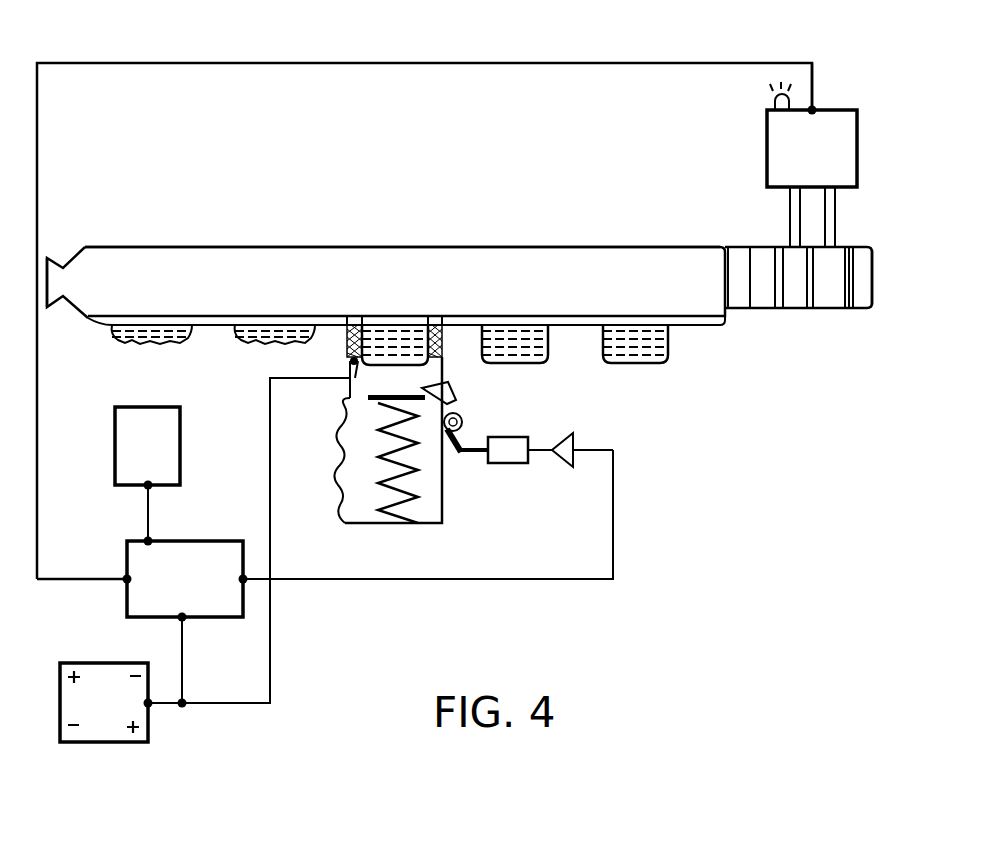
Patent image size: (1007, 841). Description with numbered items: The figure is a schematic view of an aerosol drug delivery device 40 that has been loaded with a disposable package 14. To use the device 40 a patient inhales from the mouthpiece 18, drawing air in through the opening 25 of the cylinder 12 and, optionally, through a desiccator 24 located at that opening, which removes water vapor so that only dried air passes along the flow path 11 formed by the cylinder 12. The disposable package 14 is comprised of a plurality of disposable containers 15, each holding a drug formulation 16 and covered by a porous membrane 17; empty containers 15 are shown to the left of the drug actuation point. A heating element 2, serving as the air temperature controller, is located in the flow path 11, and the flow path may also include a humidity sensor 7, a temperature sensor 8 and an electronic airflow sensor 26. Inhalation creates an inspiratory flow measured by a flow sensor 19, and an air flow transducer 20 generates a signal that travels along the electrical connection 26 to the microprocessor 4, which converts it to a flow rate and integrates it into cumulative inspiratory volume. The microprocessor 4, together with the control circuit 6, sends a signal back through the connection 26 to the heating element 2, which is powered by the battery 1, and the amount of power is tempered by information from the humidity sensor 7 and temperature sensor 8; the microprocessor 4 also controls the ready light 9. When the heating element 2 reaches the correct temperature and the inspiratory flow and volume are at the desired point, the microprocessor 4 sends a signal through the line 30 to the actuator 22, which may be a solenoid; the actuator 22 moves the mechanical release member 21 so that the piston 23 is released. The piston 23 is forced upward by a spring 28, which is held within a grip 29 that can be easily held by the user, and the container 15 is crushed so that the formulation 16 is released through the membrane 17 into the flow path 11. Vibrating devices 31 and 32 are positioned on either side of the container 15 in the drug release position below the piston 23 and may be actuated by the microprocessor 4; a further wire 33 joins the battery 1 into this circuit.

The battery 1 is at (130, 663).
The heating element 2 is at (740, 300).
The microprocessor 4 is at (142, 622).
The control circuit 6 is at (147, 474).
The humidity sensor 7 is at (777, 300).
The temperature sensor 8 is at (812, 300).
The ready light 9 is at (772, 102).
The flow path 11 is at (230, 272).
The cylinder 12 is at (163, 247).
The disposable package 14 is at (698, 357).
The disposable container 15 is at (143, 345).
The drug formulation 16 is at (623, 337).
The porous membrane 17 is at (388, 327).
The mouthpiece 18 is at (53, 260).
The flow sensor 19 is at (843, 84).
The air flow transducer 20 is at (442, 472).
The mechanical release member 21 is at (452, 400).
The actuator 22 is at (507, 463).
The piston 23 is at (368, 397).
The desiccator 24 is at (863, 263).
The opening 25 is at (873, 305).
The electrical connection 26 is at (455, 63).
The spring 28 is at (412, 512).
The grip 29 is at (328, 472).
The line 30 is at (432, 579).
The vibrating device 31 is at (340, 330).
The vibrating device 32 is at (445, 330).
The wire 33 is at (270, 660).
The aerosol drug delivery device 40 is at (667, 491).